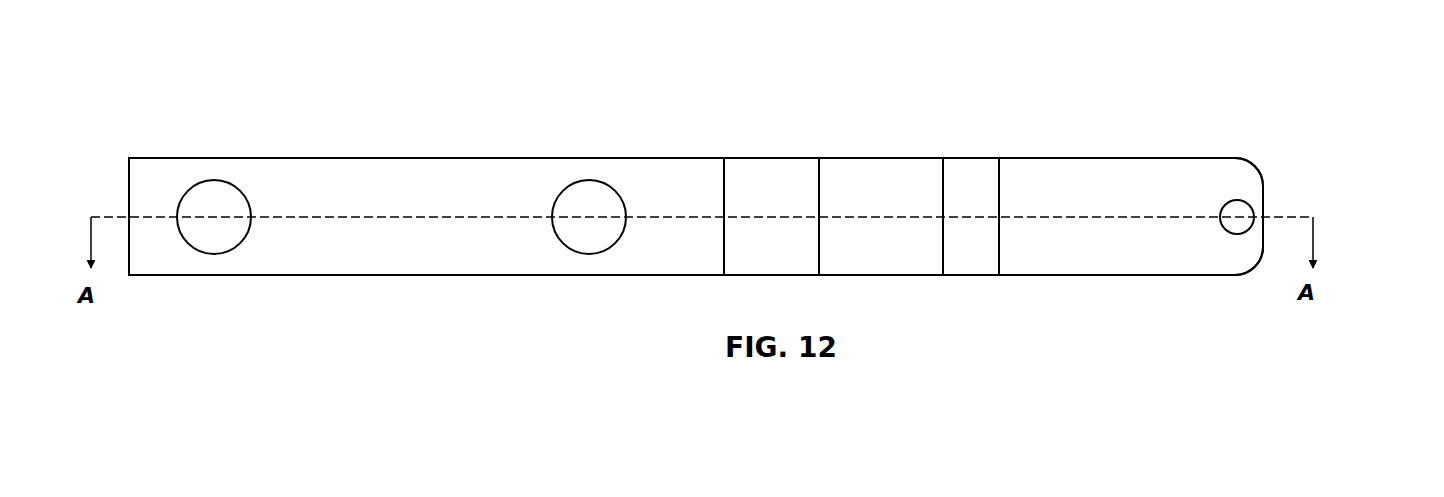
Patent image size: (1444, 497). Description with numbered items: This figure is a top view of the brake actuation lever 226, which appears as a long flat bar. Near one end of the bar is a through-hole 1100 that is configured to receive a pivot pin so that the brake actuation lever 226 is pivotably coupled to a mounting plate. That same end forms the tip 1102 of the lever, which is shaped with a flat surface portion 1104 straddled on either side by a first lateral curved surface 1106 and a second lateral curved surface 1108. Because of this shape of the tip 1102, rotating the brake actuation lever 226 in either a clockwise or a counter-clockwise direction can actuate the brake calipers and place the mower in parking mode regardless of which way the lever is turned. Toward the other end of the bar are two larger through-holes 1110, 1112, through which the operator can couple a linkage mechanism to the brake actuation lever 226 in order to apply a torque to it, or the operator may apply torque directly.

The brake actuation lever 226 is at (168, 120).
The through-hole 1100 is at (1225, 197).
The tip 1102 is at (1299, 166).
The flat surface portion 1104 is at (1267, 201).
The first lateral curved surface 1106 is at (1259, 166).
The second lateral curved surface 1108 is at (1259, 271).
The through-hole 1110 is at (231, 256).
The through-hole 1112 is at (604, 259).